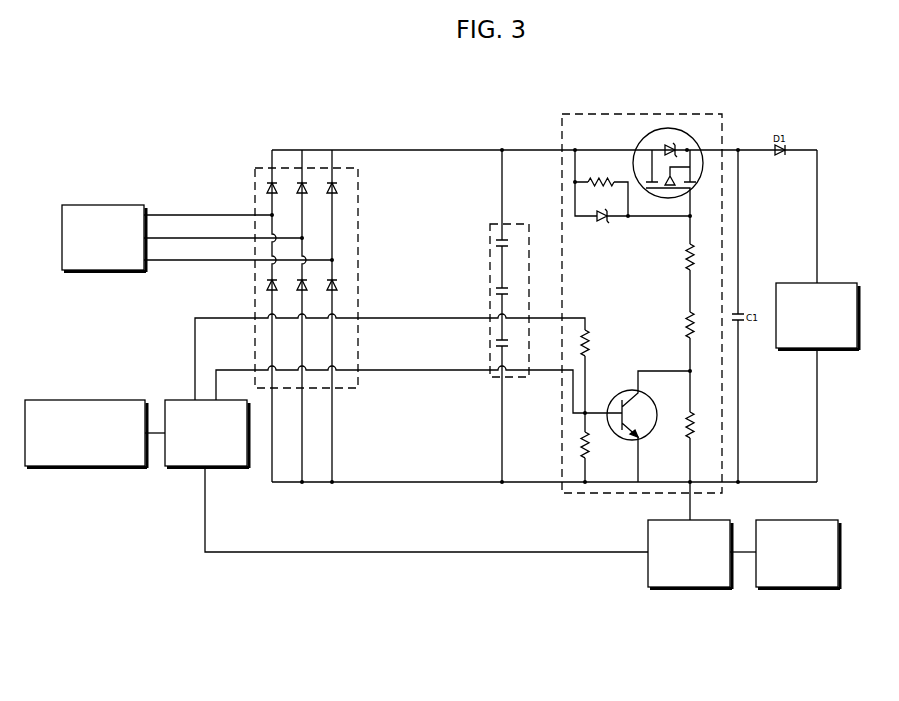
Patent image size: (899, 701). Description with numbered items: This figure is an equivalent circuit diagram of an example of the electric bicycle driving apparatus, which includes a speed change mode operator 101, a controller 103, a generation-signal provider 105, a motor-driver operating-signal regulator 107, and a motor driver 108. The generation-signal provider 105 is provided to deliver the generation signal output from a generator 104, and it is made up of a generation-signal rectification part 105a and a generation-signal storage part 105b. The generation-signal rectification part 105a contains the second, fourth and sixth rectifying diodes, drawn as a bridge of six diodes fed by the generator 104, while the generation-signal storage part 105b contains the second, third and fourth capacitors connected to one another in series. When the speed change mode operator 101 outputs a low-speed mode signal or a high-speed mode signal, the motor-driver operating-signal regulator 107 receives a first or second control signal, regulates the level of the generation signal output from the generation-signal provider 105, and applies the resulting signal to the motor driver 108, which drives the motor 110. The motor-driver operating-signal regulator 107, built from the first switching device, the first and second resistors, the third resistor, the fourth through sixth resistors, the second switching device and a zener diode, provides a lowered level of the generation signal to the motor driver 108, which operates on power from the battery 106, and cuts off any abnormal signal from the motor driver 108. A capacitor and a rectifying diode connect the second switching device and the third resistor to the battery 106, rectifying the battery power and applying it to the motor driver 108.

The speed change mode operator 101 is at (118, 400).
The controller 103 is at (176, 400).
The generator 104 is at (127, 205).
The generation-signal provider 105 is at (495, 98).
The generation-signal rectification part 105a is at (357, 168).
The generation-signal storage part 105b is at (490, 230).
The battery 106 is at (848, 283).
The motor-driver operating-signal regulator 107 is at (645, 114).
The motor driver 108 is at (698, 587).
The motor 110 is at (813, 587).